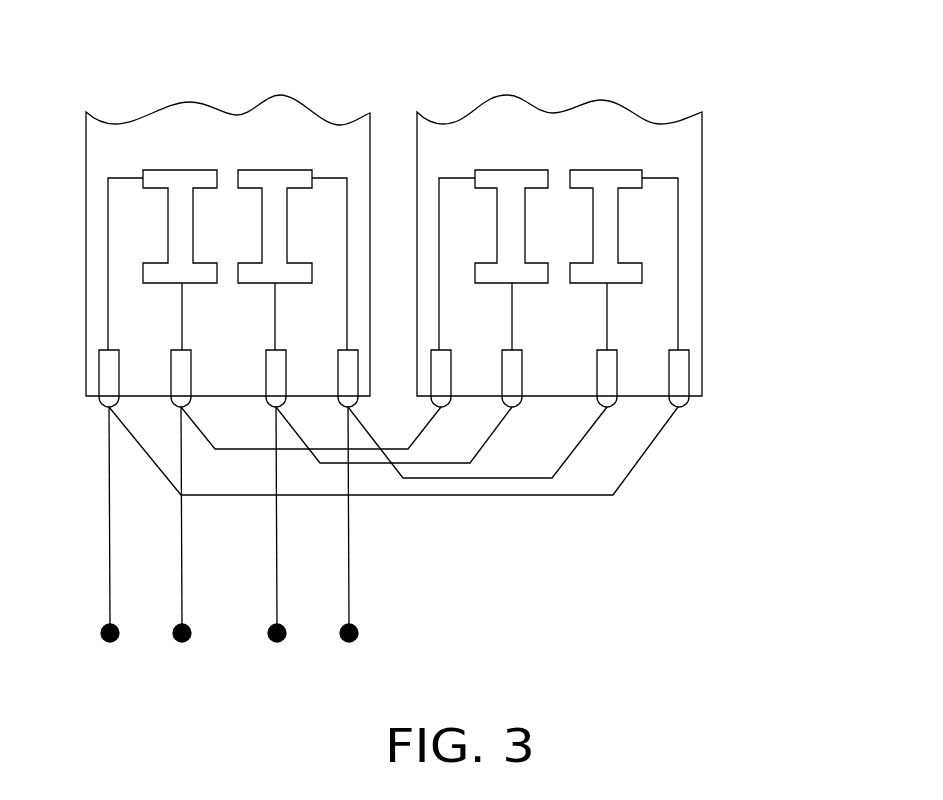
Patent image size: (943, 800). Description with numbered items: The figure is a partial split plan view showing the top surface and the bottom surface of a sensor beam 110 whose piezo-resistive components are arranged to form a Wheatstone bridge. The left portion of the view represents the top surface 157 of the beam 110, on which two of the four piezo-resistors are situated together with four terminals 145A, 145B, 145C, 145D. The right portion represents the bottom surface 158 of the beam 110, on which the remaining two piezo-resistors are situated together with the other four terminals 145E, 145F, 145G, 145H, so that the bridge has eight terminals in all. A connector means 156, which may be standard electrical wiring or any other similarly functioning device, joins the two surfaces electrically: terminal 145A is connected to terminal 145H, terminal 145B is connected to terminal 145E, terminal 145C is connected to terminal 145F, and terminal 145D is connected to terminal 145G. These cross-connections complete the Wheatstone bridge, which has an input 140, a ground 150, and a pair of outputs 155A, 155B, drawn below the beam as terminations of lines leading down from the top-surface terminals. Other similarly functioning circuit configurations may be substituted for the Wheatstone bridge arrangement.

The beam 110 is at (765, 140).
The top surface 157 is at (238, 92).
The bottom surface 158 is at (556, 92).
The terminal 145A is at (112, 348).
The terminal 145B is at (182, 348).
The terminal 145C is at (267, 368).
The terminal 145D is at (345, 348).
The terminal 145E is at (444, 348).
The terminal 145F is at (522, 368).
The terminal 145G is at (603, 348).
The terminal 145H is at (677, 348).
The connector means 156 is at (475, 520).
The input 140 is at (110, 643).
The output 155A is at (182, 643).
The ground 150 is at (277, 643).
The output 155B is at (349, 643).